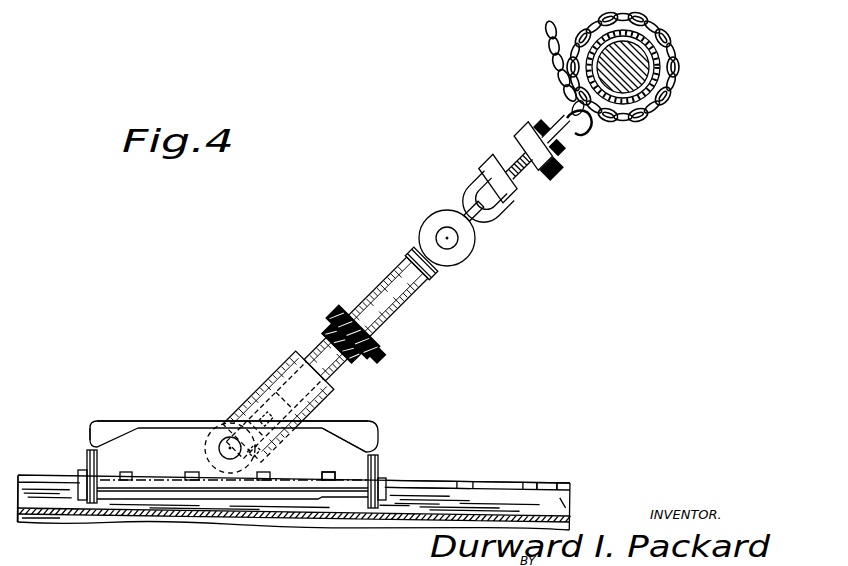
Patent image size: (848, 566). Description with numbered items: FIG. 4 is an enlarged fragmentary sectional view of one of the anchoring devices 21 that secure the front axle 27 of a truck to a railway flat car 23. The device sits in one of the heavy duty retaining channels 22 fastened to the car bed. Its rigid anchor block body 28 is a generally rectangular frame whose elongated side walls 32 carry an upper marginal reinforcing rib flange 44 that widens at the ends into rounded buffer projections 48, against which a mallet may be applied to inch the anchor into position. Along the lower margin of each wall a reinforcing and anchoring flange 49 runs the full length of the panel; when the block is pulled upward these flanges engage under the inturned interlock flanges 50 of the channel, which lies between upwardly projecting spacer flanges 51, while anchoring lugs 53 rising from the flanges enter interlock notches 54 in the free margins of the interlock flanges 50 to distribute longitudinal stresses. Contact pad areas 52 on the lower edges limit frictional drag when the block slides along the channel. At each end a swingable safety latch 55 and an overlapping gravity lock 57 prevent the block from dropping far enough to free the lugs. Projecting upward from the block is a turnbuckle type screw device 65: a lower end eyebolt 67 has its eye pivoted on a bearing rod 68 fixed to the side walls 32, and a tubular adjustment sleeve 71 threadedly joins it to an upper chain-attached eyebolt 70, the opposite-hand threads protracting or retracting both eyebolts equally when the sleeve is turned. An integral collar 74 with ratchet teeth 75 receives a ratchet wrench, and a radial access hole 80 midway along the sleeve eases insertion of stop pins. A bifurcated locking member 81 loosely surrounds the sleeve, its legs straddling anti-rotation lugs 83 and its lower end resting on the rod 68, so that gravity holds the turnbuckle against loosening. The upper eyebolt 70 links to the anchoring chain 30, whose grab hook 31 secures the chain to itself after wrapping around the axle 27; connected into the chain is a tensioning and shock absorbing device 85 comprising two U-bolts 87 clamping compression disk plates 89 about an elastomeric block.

The anchoring devices 21 is at (156, 413).
The retaining channels 22 is at (570, 508).
The railway flat car 23 is at (97, 520).
The front axle 27 is at (648, 78).
The anchor block body 28 is at (106, 414).
The anchoring chain 30 is at (658, 130).
The grab hook 31 is at (589, 130).
The side walls 32 is at (323, 440).
The reinforcing rib flange 44 is at (178, 420).
The buffer projections 48 is at (88, 430).
The reinforcing and anchoring flange 49 is at (268, 499).
The interlock flanges 50 is at (500, 483).
The spacer flanges 51 is at (547, 502).
The contact pad areas 52 is at (128, 497).
The anchoring lugs 53 is at (328, 477).
The interlock notches 54 is at (464, 484).
The safety latch 55 is at (82, 470).
The gravity lock 57 is at (88, 452).
The screw devices 65 is at (230, 384).
The lower end eyebolt 67 is at (249, 396).
The bearing rod 68 is at (224, 448).
The upper end eyebolt 70 is at (452, 262).
The adjustment sleeve 71 is at (398, 310).
The collar 74 is at (343, 308).
The ratchet teeth 75 is at (342, 312).
The radial access hole 80 is at (376, 356).
The locking member 81 is at (282, 364).
The anti-rotation lugs 83 is at (243, 403).
The tensioning and shock absorbing device 85 is at (548, 201).
The U-bolts 87 is at (481, 187).
The compression disk plates 89 is at (527, 112).